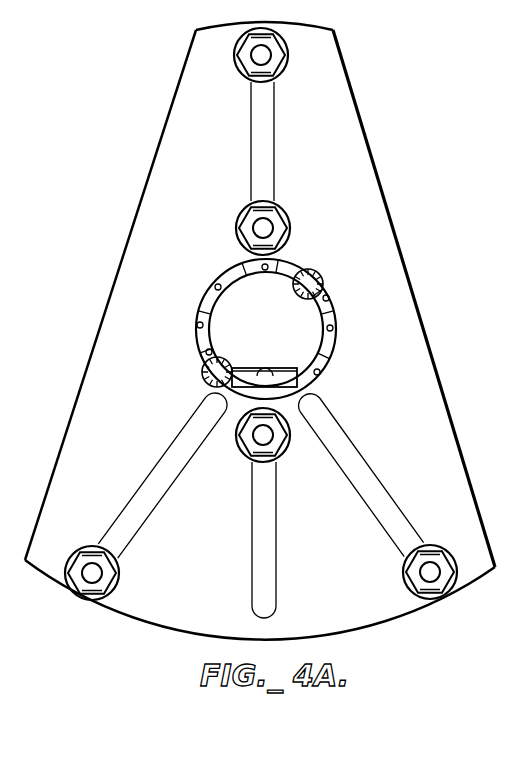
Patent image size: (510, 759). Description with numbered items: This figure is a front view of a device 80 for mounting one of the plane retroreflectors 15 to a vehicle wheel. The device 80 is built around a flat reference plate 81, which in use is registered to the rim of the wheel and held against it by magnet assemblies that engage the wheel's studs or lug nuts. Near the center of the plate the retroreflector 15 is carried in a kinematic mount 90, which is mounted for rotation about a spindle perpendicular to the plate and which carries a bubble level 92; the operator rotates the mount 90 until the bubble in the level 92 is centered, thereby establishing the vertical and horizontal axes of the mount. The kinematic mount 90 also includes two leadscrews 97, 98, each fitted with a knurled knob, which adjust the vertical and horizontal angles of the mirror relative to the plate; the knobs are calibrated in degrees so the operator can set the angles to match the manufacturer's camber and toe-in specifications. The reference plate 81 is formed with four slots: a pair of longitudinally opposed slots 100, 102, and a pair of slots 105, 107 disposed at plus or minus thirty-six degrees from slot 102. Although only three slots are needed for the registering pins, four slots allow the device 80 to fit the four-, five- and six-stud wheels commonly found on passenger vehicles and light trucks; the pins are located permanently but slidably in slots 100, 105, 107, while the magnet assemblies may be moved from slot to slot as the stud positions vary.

The retroreflector 15 is at (278, 334).
The device 80 is at (118, 230).
The reference plate 81 is at (364, 172).
The kinematic mount 90 is at (325, 362).
The bubble level 92 is at (276, 368).
The leadscrew 97 is at (323, 280).
The leadscrew 98 is at (204, 379).
The slot 100 is at (259, 148).
The slot 102 is at (277, 538).
The slot 105 is at (151, 497).
The slot 107 is at (365, 478).